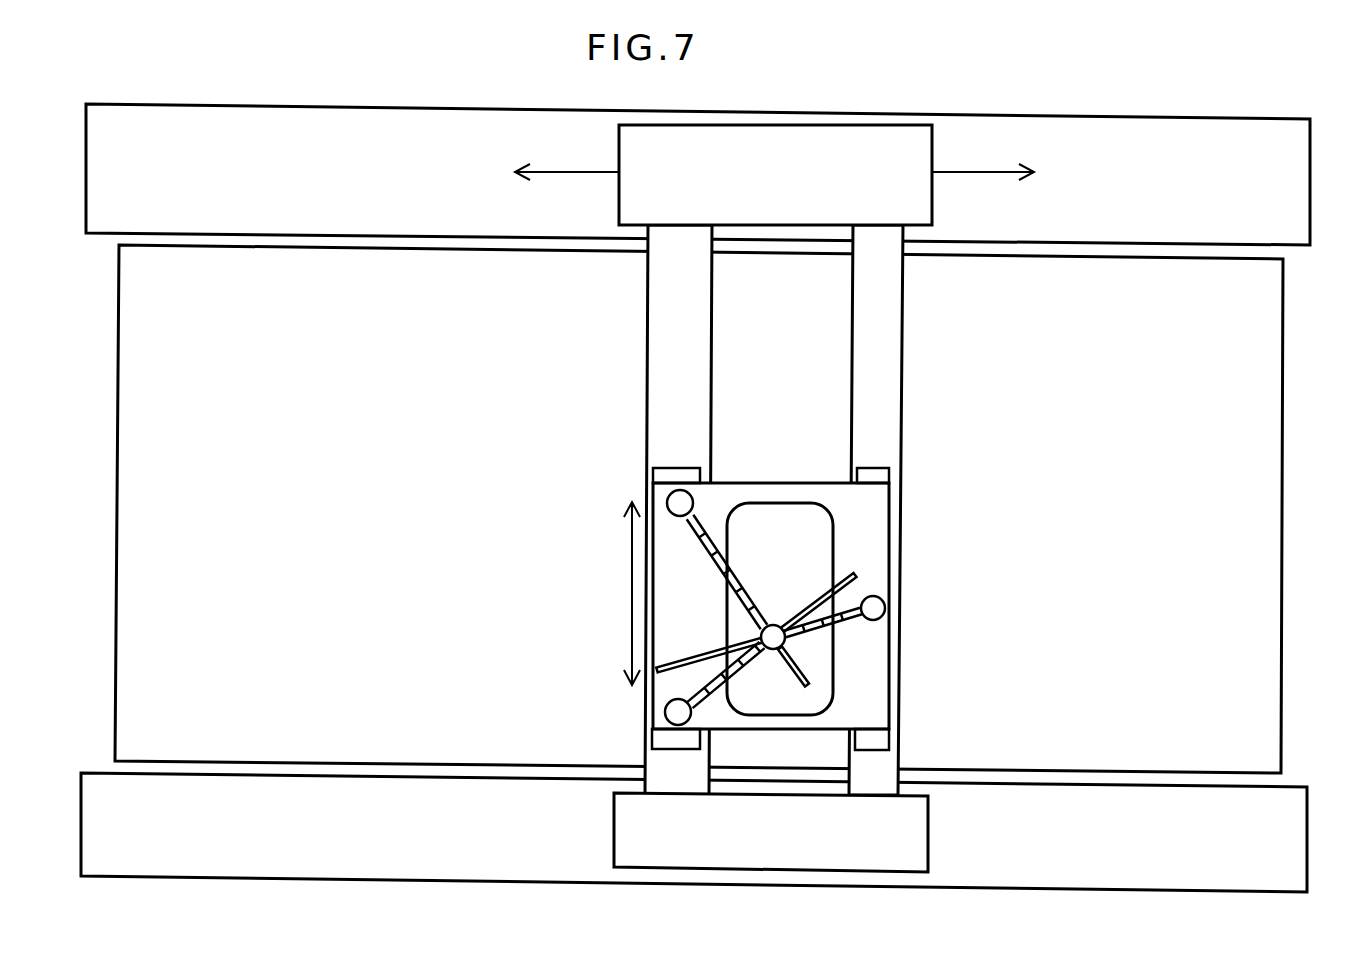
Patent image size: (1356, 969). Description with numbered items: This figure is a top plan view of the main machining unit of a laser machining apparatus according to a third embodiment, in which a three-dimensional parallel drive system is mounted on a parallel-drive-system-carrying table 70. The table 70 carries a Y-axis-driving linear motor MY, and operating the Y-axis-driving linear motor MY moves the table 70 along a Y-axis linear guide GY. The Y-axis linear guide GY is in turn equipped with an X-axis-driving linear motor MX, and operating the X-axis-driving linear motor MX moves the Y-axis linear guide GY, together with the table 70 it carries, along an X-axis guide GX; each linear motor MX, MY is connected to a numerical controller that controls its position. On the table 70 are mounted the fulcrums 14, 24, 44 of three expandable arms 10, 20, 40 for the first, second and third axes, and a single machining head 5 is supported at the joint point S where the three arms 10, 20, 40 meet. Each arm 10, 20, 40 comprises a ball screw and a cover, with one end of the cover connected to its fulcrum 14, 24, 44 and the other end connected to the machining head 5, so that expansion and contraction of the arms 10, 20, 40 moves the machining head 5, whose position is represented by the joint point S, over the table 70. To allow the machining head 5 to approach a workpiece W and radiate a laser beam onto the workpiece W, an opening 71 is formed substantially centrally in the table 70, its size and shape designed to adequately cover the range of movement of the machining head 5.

The X-axis guide GX is at (1104, 138).
The X-axis-driving linear motor MX is at (864, 148).
The Y-axis linear guide GY is at (882, 358).
The Y-axis-driving linear motor MY is at (882, 742).
The workpiece W is at (1255, 498).
The parallel-drive-system-carrying table 70 is at (867, 682).
The opening 71 is at (795, 698).
The machining head 5 is at (777, 623).
The joint point S is at (761, 633).
The expandable arm 20 is at (692, 561).
The fulcrum 24 is at (666, 478).
The expandable arm 40 is at (689, 668).
The fulcrum 44 is at (665, 712).
The expandable arm 10 is at (859, 635).
The fulcrum 14 is at (882, 604).